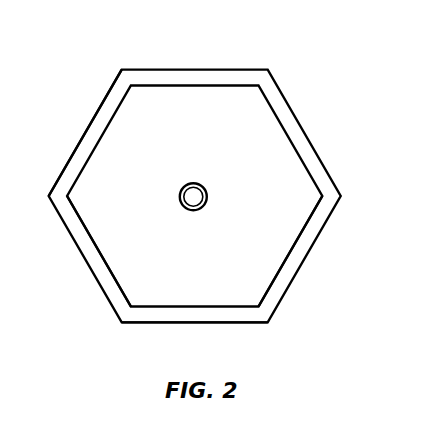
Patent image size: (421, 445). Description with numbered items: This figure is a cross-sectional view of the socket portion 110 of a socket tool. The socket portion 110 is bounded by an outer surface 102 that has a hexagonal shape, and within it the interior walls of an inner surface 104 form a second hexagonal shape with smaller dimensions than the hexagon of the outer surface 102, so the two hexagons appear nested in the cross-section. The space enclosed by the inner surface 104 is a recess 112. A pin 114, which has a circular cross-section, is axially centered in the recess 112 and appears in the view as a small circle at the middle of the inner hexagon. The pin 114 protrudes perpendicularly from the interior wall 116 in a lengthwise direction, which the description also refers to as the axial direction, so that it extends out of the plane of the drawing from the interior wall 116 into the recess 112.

The socket portion 110 is at (327, 118).
The outer surface 102 is at (95, 115).
The inner surface 104 is at (98, 248).
The pin 114 is at (193, 183).
The interior wall 116 is at (282, 220).
The recess 112 is at (245, 298).